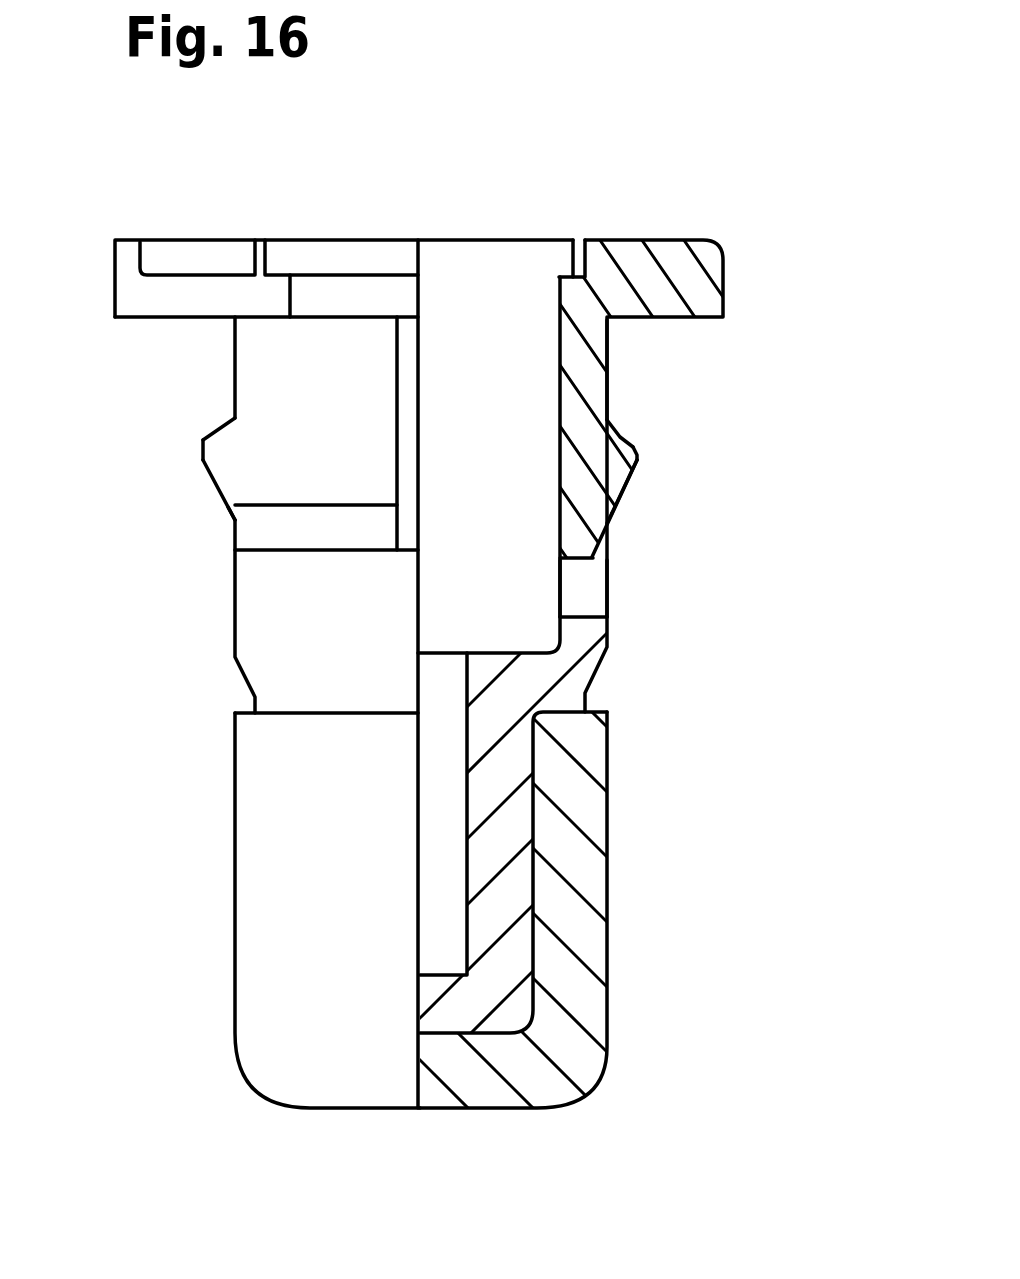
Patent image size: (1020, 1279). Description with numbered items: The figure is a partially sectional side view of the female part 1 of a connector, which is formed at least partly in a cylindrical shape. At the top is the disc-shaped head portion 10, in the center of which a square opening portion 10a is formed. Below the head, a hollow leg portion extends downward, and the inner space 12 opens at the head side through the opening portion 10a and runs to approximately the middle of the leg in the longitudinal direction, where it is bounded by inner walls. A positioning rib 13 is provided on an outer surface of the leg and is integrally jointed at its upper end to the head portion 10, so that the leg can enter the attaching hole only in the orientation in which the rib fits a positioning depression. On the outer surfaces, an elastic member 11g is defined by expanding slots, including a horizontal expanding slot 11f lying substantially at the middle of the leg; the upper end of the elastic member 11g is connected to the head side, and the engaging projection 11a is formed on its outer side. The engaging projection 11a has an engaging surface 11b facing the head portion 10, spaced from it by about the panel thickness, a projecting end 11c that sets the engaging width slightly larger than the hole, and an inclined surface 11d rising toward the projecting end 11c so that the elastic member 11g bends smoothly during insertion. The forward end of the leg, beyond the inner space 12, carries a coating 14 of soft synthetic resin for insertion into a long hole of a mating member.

The female part 1 is at (642, 224).
The head portion 10 is at (697, 270).
The opening portion 10a is at (472, 262).
The engaging projection 11a is at (202, 453).
The engaging surface 11b is at (223, 422).
The projecting end 11c is at (200, 462).
The inclined surface 11d is at (215, 497).
The horizontal expanding slot 11f is at (587, 600).
The elastic member 11g is at (573, 370).
The inner space 12 is at (493, 622).
The positioning rib 13 is at (402, 400).
The coating 14 is at (587, 968).